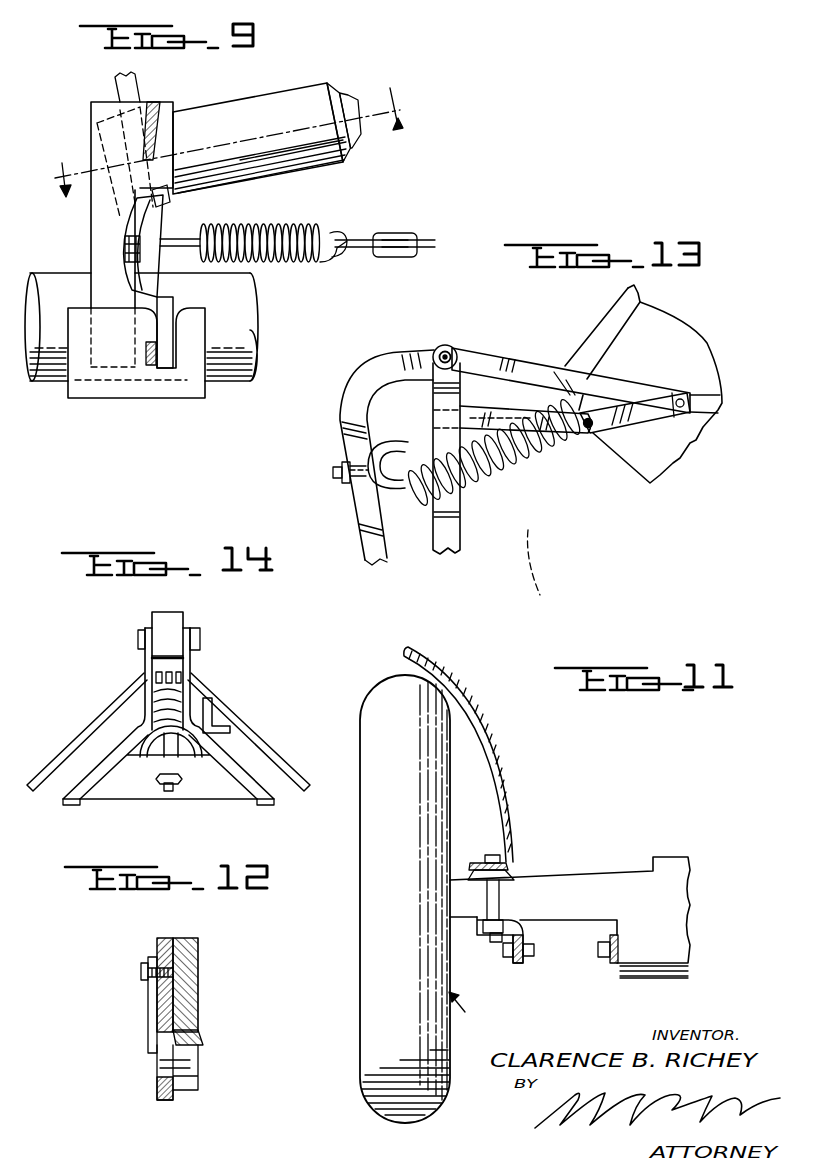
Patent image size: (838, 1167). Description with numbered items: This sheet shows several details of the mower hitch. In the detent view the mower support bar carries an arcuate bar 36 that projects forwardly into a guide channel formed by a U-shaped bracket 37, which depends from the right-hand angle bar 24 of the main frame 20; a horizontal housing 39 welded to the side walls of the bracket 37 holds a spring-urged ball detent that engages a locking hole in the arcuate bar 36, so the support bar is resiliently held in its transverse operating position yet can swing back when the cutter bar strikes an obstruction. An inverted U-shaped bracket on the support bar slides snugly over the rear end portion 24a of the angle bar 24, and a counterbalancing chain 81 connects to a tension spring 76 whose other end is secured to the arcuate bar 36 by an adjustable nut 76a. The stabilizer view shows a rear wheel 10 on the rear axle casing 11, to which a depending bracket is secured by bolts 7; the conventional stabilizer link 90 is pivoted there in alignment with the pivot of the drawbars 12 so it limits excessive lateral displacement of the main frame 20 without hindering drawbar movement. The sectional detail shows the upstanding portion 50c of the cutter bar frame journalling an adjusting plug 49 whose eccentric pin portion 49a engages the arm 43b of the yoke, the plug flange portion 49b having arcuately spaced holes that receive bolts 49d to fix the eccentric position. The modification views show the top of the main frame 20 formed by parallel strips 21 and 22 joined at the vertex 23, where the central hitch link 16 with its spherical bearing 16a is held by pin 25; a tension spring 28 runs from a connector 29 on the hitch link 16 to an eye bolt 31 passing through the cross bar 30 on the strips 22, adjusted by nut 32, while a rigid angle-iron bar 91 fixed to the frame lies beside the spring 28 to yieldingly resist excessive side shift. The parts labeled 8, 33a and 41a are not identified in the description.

In FIG. 11, the bolts 7 is at (495, 857).
In FIG. 11, the bracket 8 is at (512, 963).
In FIG. 9, the rear wheels 10 is at (232, 138).
In FIG. 13, the rear wheels 10 is at (530, 528).
In FIG. 11, the rear wheels 10 is at (425, 899).
In FIG. 11, the rear axle casing 11 is at (617, 870).
In FIG. 11, the drawbars 12 is at (615, 964).
In FIG. 13, the central hitch link 16 is at (535, 368).
In FIG. 14, the spherical-type bearing 16a is at (165, 624).
In FIG. 13, the main frame 20 is at (355, 397).
In FIG. 9, the strip 21 is at (151, 110).
In FIG. 13, the strip 21 is at (458, 398).
In FIG. 14, the strip 21 is at (270, 746).
In FIG. 9, the strip 22 is at (146, 351).
In FIG. 13, the strip 22 is at (388, 365).
In FIG. 14, the strip 22 is at (270, 800).
In FIG. 13, the vertex connection 23 is at (441, 346).
In FIG. 9, the angle bars 24 is at (91, 246).
In FIG. 9, the rear end portion of angle bar 24a is at (122, 372).
In FIG. 13, the pin 25 is at (452, 357).
In FIG. 14, the pin 25 is at (137, 641).
In FIG. 13, the tension spring 28 is at (517, 452).
In FIG. 14, the tension spring 28 is at (198, 748).
In FIG. 13, the connector 29 is at (640, 410).
In FIG. 13, the cross bar 30 is at (347, 486).
In FIG. 14, the cross bar 30 is at (109, 788).
In FIG. 13, the eye bolt 31 is at (333, 474).
In FIG. 14, the eye bolt 31 is at (171, 791).
In FIG. 13, the nut 32 is at (342, 466).
In FIG. 14, the nut 32 is at (163, 787).
In FIG. 9, the pipe 33a is at (236, 380).
In FIG. 9, the arcuate bar 36 is at (117, 84).
In FIG. 9, the U-shaped bracket 37 is at (95, 112).
In FIG. 9, the horizontal housing 39 is at (268, 106).
In FIG. 9, the clamp box 41a is at (68, 392).
In FIG. 12, the arm of yoke 43b is at (196, 984).
In FIG. 12, the adjusting plug 49 is at (210, 1032).
In FIG. 12, the pin portion 49a is at (198, 1070).
In FIG. 12, the flange portion 49b is at (150, 948).
In FIG. 12, the bolts 49d is at (145, 972).
In FIG. 12, the upstanding portion 50c is at (165, 940).
In FIG. 9, the tension spring 76 is at (283, 235).
In FIG. 9, the adjustable nut 76a is at (134, 243).
In FIG. 9, the chain 81 is at (398, 235).
In FIG. 11, the stabilizer link 90 is at (524, 962).
In FIG. 13, the rigid bar 91 is at (590, 438).
In FIG. 14, the rigid bar 91 is at (210, 713).